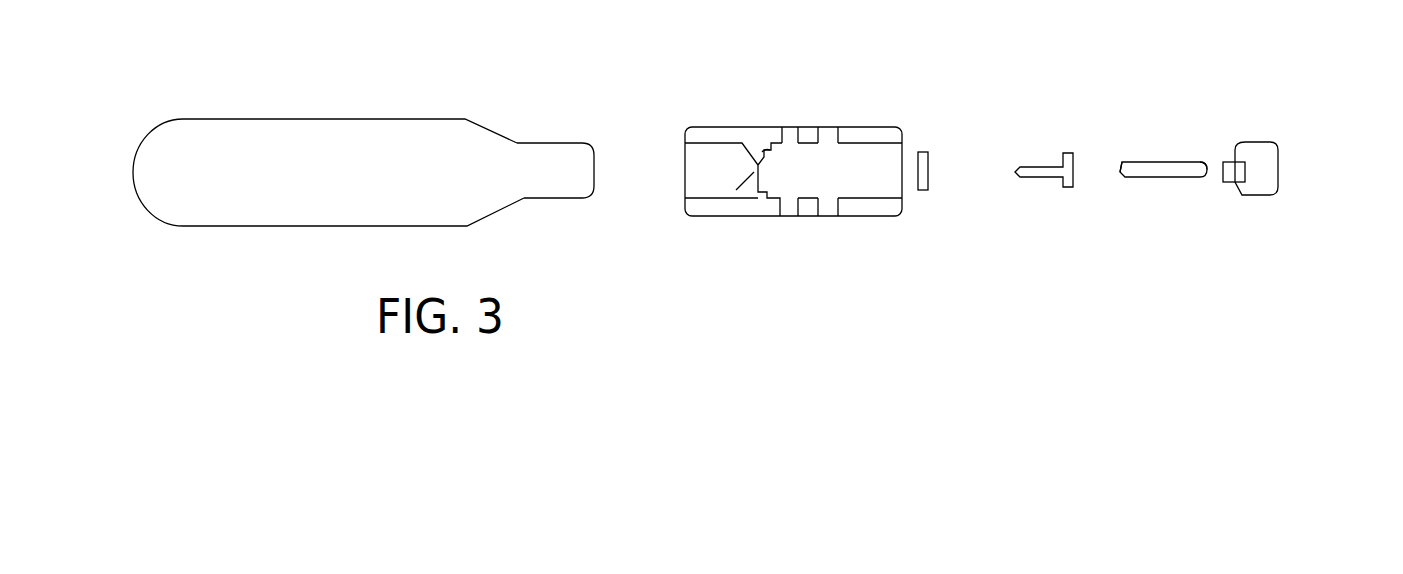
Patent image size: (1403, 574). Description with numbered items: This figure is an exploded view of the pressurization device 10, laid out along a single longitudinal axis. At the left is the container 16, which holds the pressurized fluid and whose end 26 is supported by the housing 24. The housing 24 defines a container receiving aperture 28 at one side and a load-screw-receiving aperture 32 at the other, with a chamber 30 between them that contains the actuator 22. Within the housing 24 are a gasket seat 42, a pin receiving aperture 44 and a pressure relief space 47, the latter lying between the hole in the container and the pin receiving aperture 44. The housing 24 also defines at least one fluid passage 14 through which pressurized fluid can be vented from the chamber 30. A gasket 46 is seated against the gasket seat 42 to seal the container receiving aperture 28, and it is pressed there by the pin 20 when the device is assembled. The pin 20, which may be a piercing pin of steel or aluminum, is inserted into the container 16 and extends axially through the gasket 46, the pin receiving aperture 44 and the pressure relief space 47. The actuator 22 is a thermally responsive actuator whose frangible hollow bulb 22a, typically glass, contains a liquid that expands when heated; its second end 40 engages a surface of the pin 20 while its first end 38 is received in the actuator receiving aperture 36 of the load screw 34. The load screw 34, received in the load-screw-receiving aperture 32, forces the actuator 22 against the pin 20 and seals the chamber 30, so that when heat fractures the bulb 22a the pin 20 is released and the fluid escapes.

The pressurization device 10 is at (272, 70).
The container 16 is at (345, 192).
The end 26 is at (562, 165).
The housing 24 is at (693, 127).
The container receiving aperture 28 is at (698, 172).
The chamber 30 is at (810, 168).
The load-screw-receiving aperture 32 is at (872, 173).
The fluid passage 14 is at (787, 203).
The gasket seat 42 is at (773, 153).
The pressure relief space 47 is at (748, 158).
The pin receiving aperture 44 is at (758, 168).
The gasket 46 is at (928, 163).
The pin 20 is at (1043, 178).
The actuator 22 is at (1172, 135).
The frangible hollow bulb 22a is at (1155, 168).
The second end 40 is at (1120, 173).
The first end 38 is at (1207, 172).
The load screw 34 is at (1267, 172).
The actuator receiving aperture 36 is at (1227, 160).